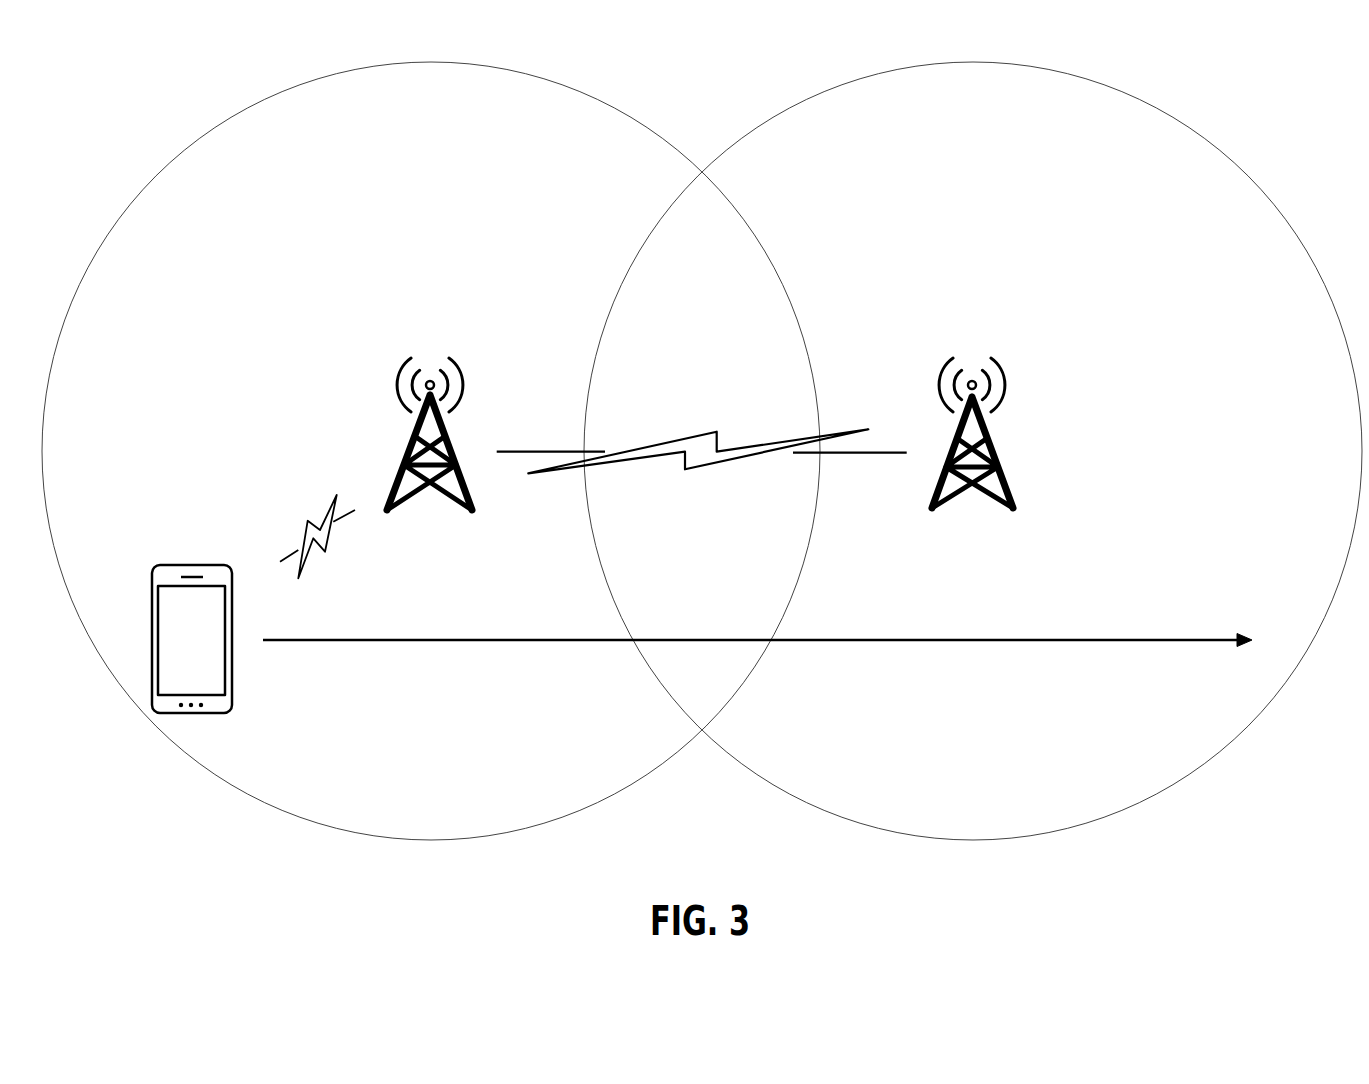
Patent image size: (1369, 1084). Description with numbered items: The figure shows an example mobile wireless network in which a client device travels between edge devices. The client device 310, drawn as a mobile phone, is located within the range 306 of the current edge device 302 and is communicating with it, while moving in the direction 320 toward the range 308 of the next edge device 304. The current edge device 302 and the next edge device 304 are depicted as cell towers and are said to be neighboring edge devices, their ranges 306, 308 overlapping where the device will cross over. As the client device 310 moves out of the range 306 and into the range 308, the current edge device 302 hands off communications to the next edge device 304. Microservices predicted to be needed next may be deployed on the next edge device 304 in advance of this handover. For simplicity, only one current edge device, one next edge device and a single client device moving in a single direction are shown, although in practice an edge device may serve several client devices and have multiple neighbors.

The current edge device 302 is at (408, 463).
The next edge device 304 is at (1000, 465).
The range of the current edge device 306 is at (263, 102).
The range of the next edge device 308 is at (1203, 140).
The client device 310 is at (161, 565).
The direction 320 is at (729, 640).